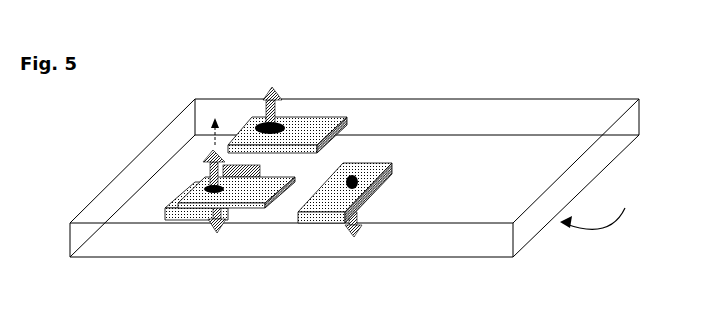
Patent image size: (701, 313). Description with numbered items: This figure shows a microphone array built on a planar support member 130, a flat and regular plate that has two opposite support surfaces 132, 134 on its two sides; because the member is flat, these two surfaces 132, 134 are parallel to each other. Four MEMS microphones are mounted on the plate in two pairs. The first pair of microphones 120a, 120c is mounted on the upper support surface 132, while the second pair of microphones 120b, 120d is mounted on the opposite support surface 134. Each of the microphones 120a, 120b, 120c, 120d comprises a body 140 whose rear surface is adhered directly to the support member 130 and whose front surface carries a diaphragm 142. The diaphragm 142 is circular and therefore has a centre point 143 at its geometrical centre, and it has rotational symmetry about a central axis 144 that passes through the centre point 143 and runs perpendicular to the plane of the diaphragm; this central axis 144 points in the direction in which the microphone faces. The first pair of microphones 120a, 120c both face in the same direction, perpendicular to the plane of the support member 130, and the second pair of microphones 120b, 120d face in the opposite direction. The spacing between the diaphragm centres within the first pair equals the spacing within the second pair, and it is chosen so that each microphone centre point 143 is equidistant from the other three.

The microphone 120a is at (237, 208).
The microphone 120b is at (185, 213).
The microphone 120c is at (312, 118).
The microphone 120d is at (315, 218).
The planar support member 130 is at (354, 177).
The support surface 132 is at (533, 113).
The support surface 134 is at (600, 211).
The body 140 is at (295, 118).
The diaphragm 142 is at (263, 128).
The centre point 143 is at (212, 191).
The central axis 144 is at (212, 145).